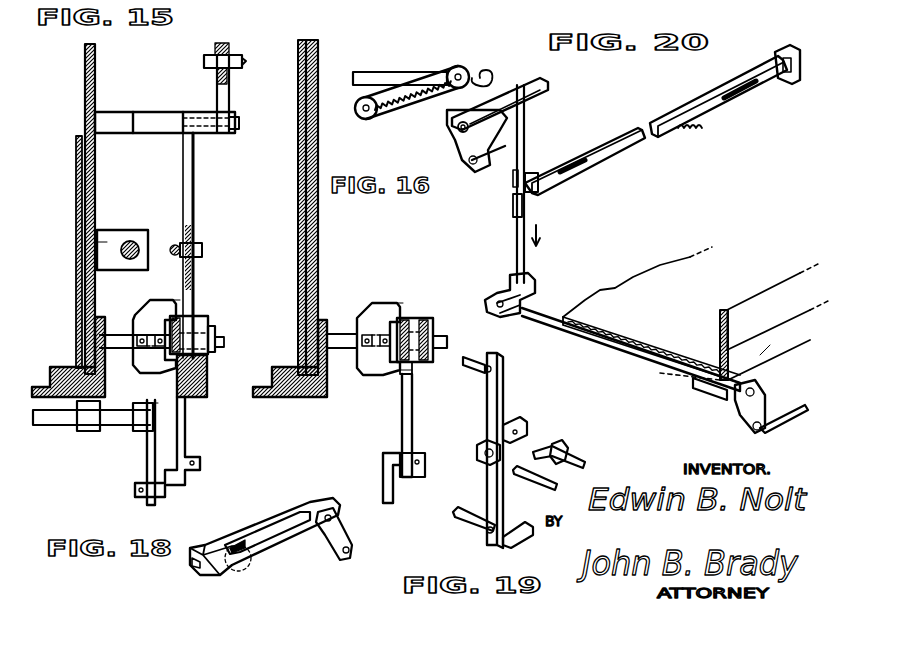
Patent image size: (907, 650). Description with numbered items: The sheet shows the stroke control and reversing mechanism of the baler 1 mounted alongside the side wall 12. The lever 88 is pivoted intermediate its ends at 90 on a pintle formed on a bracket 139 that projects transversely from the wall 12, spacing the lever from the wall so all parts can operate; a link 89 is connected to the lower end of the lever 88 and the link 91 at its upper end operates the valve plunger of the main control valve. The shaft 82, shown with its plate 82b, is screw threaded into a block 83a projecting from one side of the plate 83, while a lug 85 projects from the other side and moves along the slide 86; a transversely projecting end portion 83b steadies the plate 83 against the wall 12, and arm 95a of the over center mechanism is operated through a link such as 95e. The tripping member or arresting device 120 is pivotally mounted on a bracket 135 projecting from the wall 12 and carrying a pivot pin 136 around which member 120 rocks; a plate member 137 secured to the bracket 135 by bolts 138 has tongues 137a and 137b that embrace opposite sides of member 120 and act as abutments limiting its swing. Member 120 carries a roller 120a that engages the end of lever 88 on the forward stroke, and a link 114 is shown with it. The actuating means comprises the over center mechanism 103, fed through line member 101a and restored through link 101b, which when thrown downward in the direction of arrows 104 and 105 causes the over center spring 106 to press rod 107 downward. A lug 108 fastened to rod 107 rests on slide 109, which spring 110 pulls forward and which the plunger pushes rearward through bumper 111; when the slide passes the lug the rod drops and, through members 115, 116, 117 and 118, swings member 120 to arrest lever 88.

In FIG. 15, the machine frame 1 is at (92, 302).
In FIG. 20, the machine frame 1 is at (768, 372).
In FIG. 15, the side wall 12 is at (96, 172).
In FIG. 16, the side wall 12 is at (319, 230).
In FIG. 20, the side wall 12 is at (740, 298).
In FIG. 15, the shaft 82 is at (130, 241).
In FIG. 19, the shaft 82 is at (566, 450).
In FIG. 15, the bracket plate 82b is at (106, 243).
In FIG. 19, the plate 83 is at (500, 410).
In FIG. 19, the block 83a is at (530, 424).
In FIG. 19, the transversely projecting end portion 83b is at (518, 540).
In FIG. 19, the lug 85 is at (478, 456).
In FIG. 19, the slide 86 is at (535, 475).
In FIG. 15, the lever 88 is at (229, 92).
In FIG. 15, the link 89 is at (183, 240).
In FIG. 15, the pivot 90 is at (240, 123).
In FIG. 15, the link 91 is at (240, 58).
In FIG. 19, the arm 95a is at (488, 352).
In FIG. 19, the link 95e is at (472, 518).
In FIG. 20, the line member 101a is at (366, 70).
In FIG. 20, the link 101b is at (486, 165).
In FIG. 20, the over center mechanism 103 is at (413, 90).
In FIG. 20, the arrow 104 is at (546, 78).
In FIG. 20, the arrow 105 is at (553, 237).
In FIG. 20, the over center spring 106 is at (480, 72).
In FIG. 20, the rod 107 is at (526, 138).
In FIG. 20, the lug 108 is at (538, 172).
In FIG. 20, the slide 109 is at (627, 145).
In FIG. 20, the spring 110 is at (693, 132).
In FIG. 16, the bumper 111 is at (413, 425).
In FIG. 20, the bumper 111 is at (787, 85).
In FIG. 15, the link arm 114 is at (186, 435).
In FIG. 18, the link arm 114 is at (352, 548).
In FIG. 20, the member 115 is at (532, 275).
In FIG. 15, the member 116 is at (34, 430).
In FIG. 20, the member 116 is at (598, 345).
In FIG. 15, the member 117 is at (146, 460).
In FIG. 20, the member 117 is at (738, 405).
In FIG. 15, the member 118 is at (176, 492).
In FIG. 16, the member 118 is at (390, 482).
In FIG. 20, the member 118 is at (792, 412).
In FIG. 15, the valve plunger arresting device 120 is at (205, 380).
In FIG. 16, the valve plunger arresting device 120 is at (420, 326).
In FIG. 18, the valve plunger arresting device 120 is at (283, 552).
In FIG. 18, the roller 120a is at (245, 540).
In FIG. 15, the bracket 135 is at (95, 356).
In FIG. 16, the bracket 135 is at (345, 325).
In FIG. 15, the pivot pin 136 is at (226, 345).
In FIG. 16, the pivot pin 136 is at (448, 342).
In FIG. 15, the plate member 137 is at (150, 314).
In FIG. 16, the plate member 137 is at (380, 302).
In FIG. 15, the tongue 137a is at (185, 296).
In FIG. 16, the tongue 137a is at (404, 320).
In FIG. 15, the tongue 137b is at (146, 420).
In FIG. 16, the tongue 137b is at (412, 374).
In FIG. 15, the bolts 138 is at (160, 348).
In FIG. 16, the bolts 138 is at (378, 366).
In FIG. 15, the bracket 139 is at (155, 116).